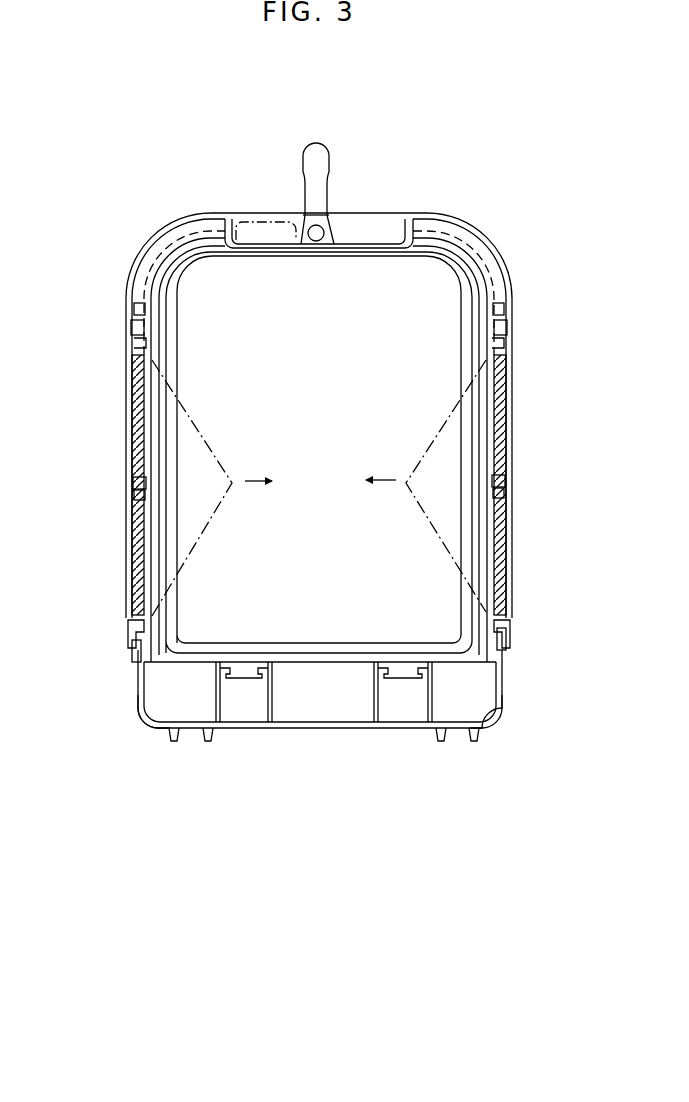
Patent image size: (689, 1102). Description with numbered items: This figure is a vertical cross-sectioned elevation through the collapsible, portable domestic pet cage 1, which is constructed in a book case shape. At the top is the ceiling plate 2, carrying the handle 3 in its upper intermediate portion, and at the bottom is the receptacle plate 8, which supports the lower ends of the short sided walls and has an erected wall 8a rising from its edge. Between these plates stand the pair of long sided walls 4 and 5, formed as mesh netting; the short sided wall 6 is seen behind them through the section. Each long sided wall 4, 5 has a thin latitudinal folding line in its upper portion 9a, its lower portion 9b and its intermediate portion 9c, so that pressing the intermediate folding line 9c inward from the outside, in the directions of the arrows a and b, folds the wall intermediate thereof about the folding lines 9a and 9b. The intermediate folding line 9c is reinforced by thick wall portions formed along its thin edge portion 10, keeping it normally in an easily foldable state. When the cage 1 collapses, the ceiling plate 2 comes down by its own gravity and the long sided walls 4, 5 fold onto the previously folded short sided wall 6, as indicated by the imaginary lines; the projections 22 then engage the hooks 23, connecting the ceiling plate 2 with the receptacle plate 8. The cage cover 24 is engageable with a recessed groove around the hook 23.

The collapsible portable domestic pet cage 1 is at (462, 172).
The ceiling plate 2 is at (492, 237).
The handle 3 is at (272, 234).
The long sided wall 4 is at (507, 368).
The long sided wall 5 is at (131, 368).
The short sided wall 6 is at (413, 412).
The receptacle plate 8 is at (512, 675).
The erected wall 8a is at (140, 710).
The upper folding line 9a is at (135, 309).
The lower folding line 9b is at (136, 655).
The intermediate folding line 9c is at (136, 481).
The thin edge portion 10 is at (138, 493).
The projection 22 is at (133, 328).
The hook 23 is at (136, 636).
The cage cover 24 is at (133, 431).